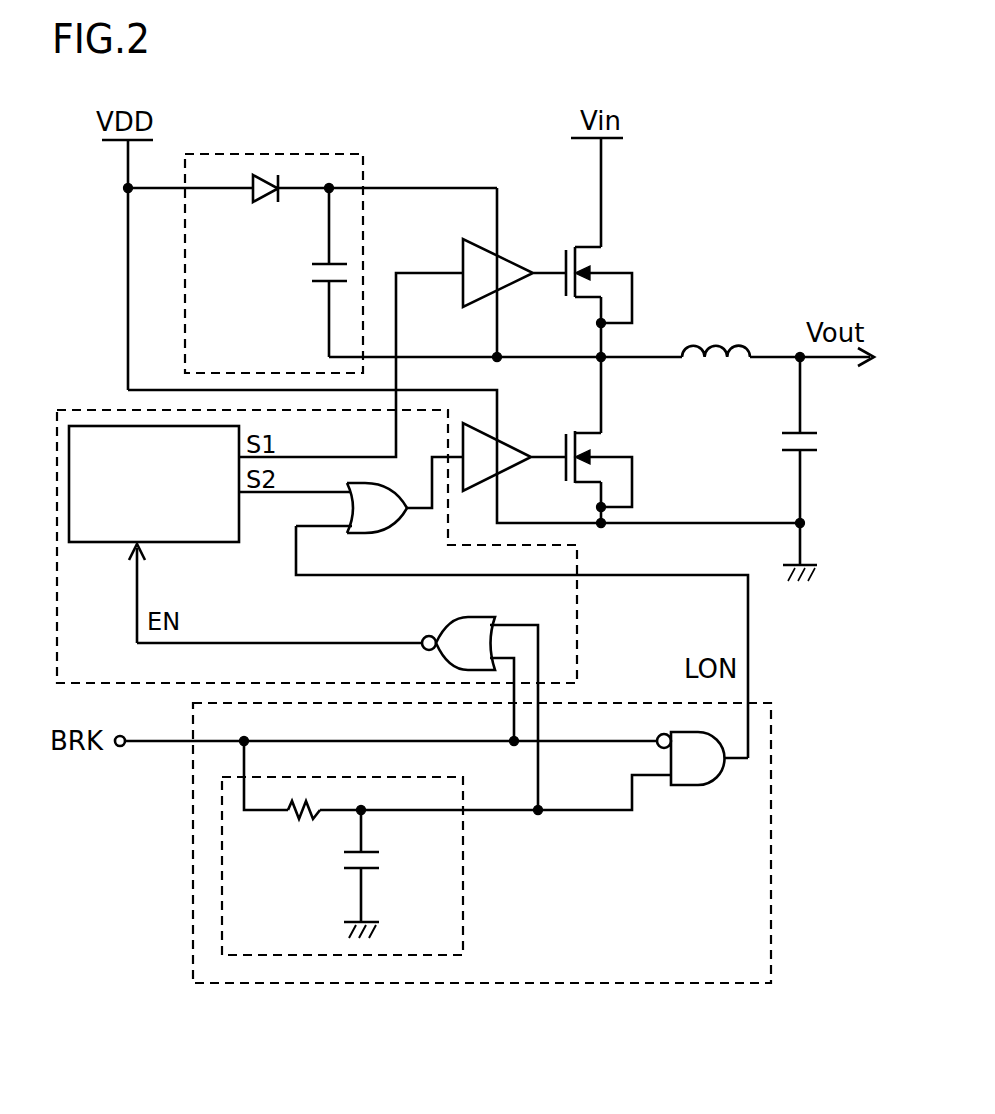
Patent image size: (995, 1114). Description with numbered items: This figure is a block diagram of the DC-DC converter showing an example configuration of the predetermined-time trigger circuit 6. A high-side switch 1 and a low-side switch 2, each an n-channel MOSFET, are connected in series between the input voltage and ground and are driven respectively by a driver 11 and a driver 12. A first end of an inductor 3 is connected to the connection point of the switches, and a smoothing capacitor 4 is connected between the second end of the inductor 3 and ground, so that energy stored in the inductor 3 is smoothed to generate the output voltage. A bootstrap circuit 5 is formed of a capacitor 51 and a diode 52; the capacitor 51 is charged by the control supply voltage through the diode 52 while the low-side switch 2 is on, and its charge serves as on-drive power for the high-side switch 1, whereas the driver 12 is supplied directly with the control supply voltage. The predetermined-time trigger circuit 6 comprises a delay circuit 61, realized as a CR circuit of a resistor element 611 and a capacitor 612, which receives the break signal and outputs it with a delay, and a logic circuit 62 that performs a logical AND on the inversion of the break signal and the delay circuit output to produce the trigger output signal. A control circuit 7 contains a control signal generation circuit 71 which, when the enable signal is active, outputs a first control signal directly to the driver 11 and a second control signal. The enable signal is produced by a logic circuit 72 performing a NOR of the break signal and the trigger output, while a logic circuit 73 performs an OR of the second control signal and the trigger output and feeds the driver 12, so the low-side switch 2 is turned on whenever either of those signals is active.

The high-side switch 1 is at (590, 256).
The low-side switch 2 is at (592, 440).
The inductor 3 is at (716, 338).
The smoothing capacitor 4 is at (812, 452).
The bootstrap circuit 5 is at (363, 160).
The capacitor 51 is at (316, 283).
The diode 52 is at (265, 200).
The driver 11 is at (503, 262).
The driver 12 is at (507, 446).
The predetermined-time trigger circuit 6 is at (771, 810).
The delay circuit 61 is at (463, 936).
The resistor element 611 is at (302, 822).
The capacitor 612 is at (372, 870).
The logic circuit 62 is at (694, 786).
The control circuit 7 is at (577, 623).
The control signal generation circuit 71 is at (112, 543).
The logic circuit 72 is at (457, 618).
The logic circuit 73 is at (372, 533).